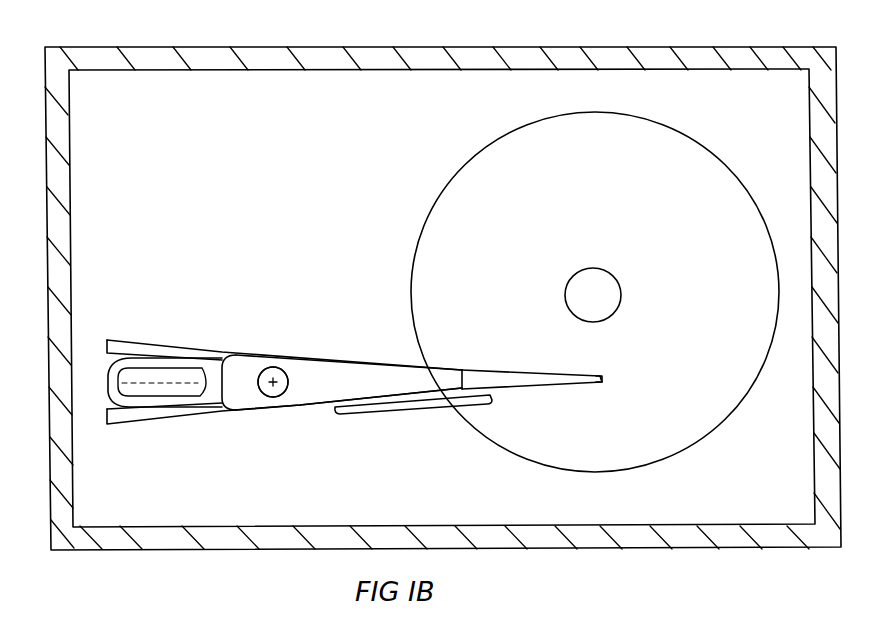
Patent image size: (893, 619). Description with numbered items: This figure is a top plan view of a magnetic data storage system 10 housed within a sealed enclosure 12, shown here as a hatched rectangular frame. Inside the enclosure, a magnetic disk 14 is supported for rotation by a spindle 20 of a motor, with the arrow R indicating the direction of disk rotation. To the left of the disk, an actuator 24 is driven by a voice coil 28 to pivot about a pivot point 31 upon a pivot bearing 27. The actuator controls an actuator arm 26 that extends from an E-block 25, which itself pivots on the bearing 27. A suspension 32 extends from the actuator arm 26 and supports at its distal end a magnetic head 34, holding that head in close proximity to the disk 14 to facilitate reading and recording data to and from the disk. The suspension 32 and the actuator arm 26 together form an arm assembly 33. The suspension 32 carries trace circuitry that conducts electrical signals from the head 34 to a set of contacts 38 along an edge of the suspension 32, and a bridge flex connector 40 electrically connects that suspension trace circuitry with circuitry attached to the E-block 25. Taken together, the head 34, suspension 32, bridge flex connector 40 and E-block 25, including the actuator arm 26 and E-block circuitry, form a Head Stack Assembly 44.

The magnetic data storage system 10 is at (585, 22).
The sealed enclosure 12 is at (330, 47).
The magnetic disk 14 is at (695, 172).
The spindle 20 is at (614, 278).
The actuator 24 is at (168, 328).
The E-block 25 is at (288, 354).
The actuator arm 26 is at (415, 366).
The pivot bearing 27 is at (290, 381).
The voice coil 28 is at (105, 379).
The pivot point 31 is at (272, 367).
The suspension 32 is at (510, 368).
The arm assembly 33 is at (524, 420).
The magnetic head 34 is at (598, 395).
The set of contacts 38 is at (340, 360).
The bridge flex connector 40 is at (393, 409).
The Head Stack Assembly 44 is at (313, 440).
The disk rotation direction R is at (598, 140).